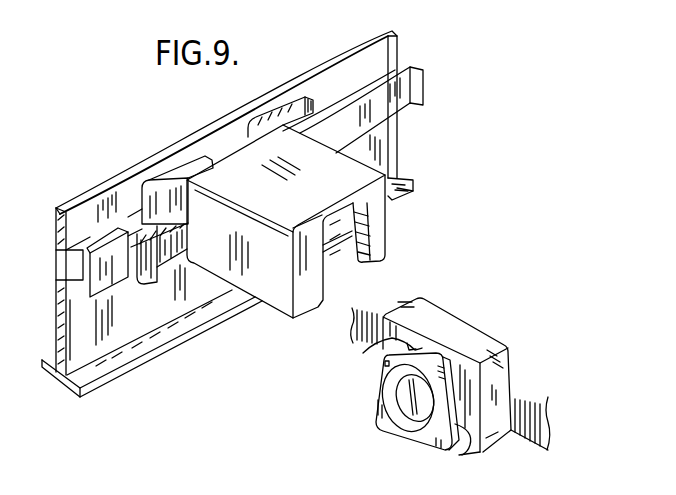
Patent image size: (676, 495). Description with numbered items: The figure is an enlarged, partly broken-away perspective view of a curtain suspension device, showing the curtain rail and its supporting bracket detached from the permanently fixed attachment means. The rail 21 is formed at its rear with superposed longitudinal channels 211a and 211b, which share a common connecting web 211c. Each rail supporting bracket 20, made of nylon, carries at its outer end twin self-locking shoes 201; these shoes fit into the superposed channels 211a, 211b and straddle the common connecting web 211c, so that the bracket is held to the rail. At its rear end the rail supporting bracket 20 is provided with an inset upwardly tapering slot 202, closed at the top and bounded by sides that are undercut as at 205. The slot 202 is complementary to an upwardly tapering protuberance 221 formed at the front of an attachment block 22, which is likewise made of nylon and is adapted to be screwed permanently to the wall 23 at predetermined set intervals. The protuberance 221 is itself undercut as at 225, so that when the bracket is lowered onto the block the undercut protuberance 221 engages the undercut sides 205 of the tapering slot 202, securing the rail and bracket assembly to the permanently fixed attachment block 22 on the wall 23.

The rail supporting bracket 20 is at (347, 181).
The twin self-locking shoes 201 is at (167, 187).
The inset upwardly tapering slot 202 is at (320, 283).
The undercut sides 205 is at (361, 266).
The rail 21 is at (125, 327).
The upper longitudinal channel 211a is at (80, 230).
The lower longitudinal channel 211b is at (74, 288).
The common connecting web 211c is at (72, 268).
The attachment block 22 is at (462, 330).
The upwardly tapering protuberance 221 is at (408, 435).
The undercut 225 is at (377, 347).
The wall 23 is at (527, 432).